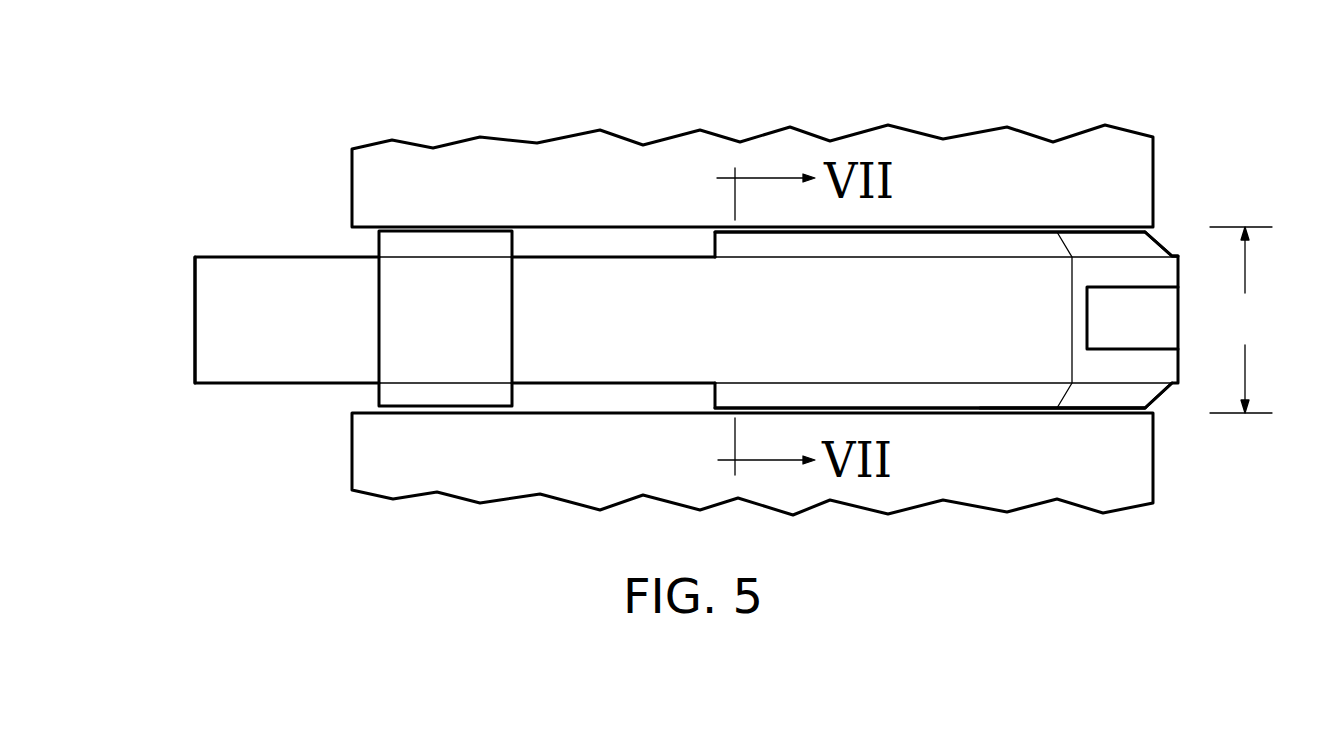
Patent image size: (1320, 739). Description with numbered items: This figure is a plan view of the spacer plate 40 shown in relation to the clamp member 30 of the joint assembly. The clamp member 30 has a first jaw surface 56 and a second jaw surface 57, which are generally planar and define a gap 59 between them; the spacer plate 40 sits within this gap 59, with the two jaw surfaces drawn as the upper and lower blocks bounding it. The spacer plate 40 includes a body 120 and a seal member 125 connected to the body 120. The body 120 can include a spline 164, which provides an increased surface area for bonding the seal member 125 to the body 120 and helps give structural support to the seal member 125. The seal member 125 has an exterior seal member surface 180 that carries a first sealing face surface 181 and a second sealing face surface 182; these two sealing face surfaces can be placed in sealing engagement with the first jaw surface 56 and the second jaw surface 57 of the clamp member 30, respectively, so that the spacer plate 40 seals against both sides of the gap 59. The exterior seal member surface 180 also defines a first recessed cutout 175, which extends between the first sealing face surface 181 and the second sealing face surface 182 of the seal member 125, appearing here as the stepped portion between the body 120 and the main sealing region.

The clamp member 30 is at (452, 187).
The spacer plate 40 is at (278, 258).
The body 120 is at (296, 323).
The first recessed cutout 175 is at (512, 310).
The second jaw surface 57 is at (942, 245).
The second sealing face surface 182 is at (925, 227).
The first jaw surface 56 is at (920, 396).
The first sealing face surface 181 is at (1017, 412).
The spline 164 is at (1133, 313).
The exterior seal member surface 180 is at (1167, 243).
The seal member 125 is at (1040, 343).
The gap 59 is at (1241, 320).